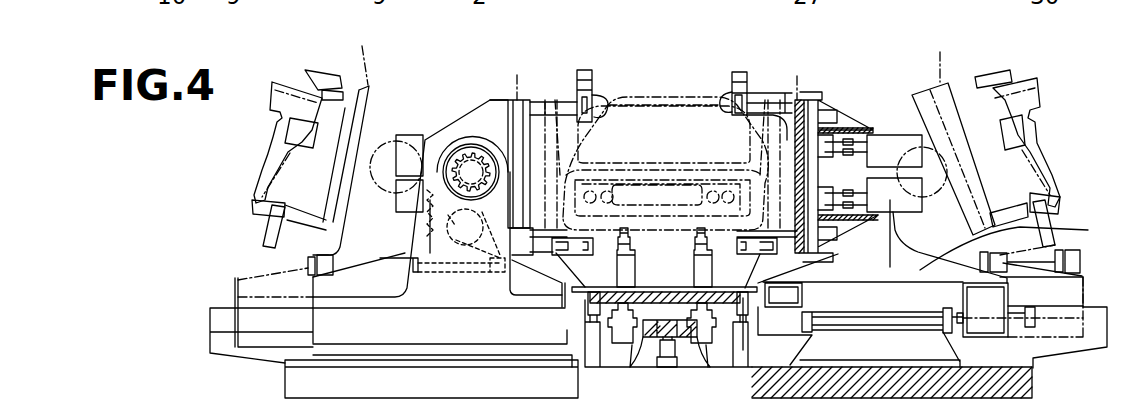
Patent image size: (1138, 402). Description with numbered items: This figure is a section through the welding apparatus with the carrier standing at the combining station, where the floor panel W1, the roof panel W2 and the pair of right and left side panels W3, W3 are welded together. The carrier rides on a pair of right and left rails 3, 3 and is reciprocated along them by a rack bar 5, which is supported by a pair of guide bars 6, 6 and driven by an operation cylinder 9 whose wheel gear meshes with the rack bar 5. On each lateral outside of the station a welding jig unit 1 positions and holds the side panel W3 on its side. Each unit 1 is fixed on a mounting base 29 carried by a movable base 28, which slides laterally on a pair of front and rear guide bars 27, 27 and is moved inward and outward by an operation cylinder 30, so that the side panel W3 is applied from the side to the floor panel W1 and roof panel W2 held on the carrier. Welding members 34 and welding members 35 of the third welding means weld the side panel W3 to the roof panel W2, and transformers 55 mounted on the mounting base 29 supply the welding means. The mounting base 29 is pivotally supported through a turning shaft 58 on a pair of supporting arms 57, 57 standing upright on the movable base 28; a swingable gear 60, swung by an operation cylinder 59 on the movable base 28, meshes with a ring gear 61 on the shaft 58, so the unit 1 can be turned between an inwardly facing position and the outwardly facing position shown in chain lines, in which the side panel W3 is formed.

The welding jig unit 1 is at (652, 62).
The rail 3 is at (594, 367).
The rack bar 5 is at (684, 345).
The guide bar 6 is at (640, 345).
The operation cylinder 9 is at (668, 362).
The guide bar 27 is at (222, 325).
The movable base 28 is at (355, 332).
The mounting base 29 is at (440, 150).
The operation cylinder 30 is at (880, 333).
The welding member 34 is at (580, 243).
The welding member 35 is at (600, 92).
The transformer 55 is at (385, 210).
The supporting arm 57 is at (480, 140).
The turning shaft 58 is at (455, 160).
The operation cylinder 59 is at (308, 265).
The swingable gear 60 is at (428, 226).
The ring gear 61 is at (410, 130).
The floor panel W1 is at (653, 283).
The roof panel W2 is at (685, 96).
The side panel W3 is at (1088, 146).